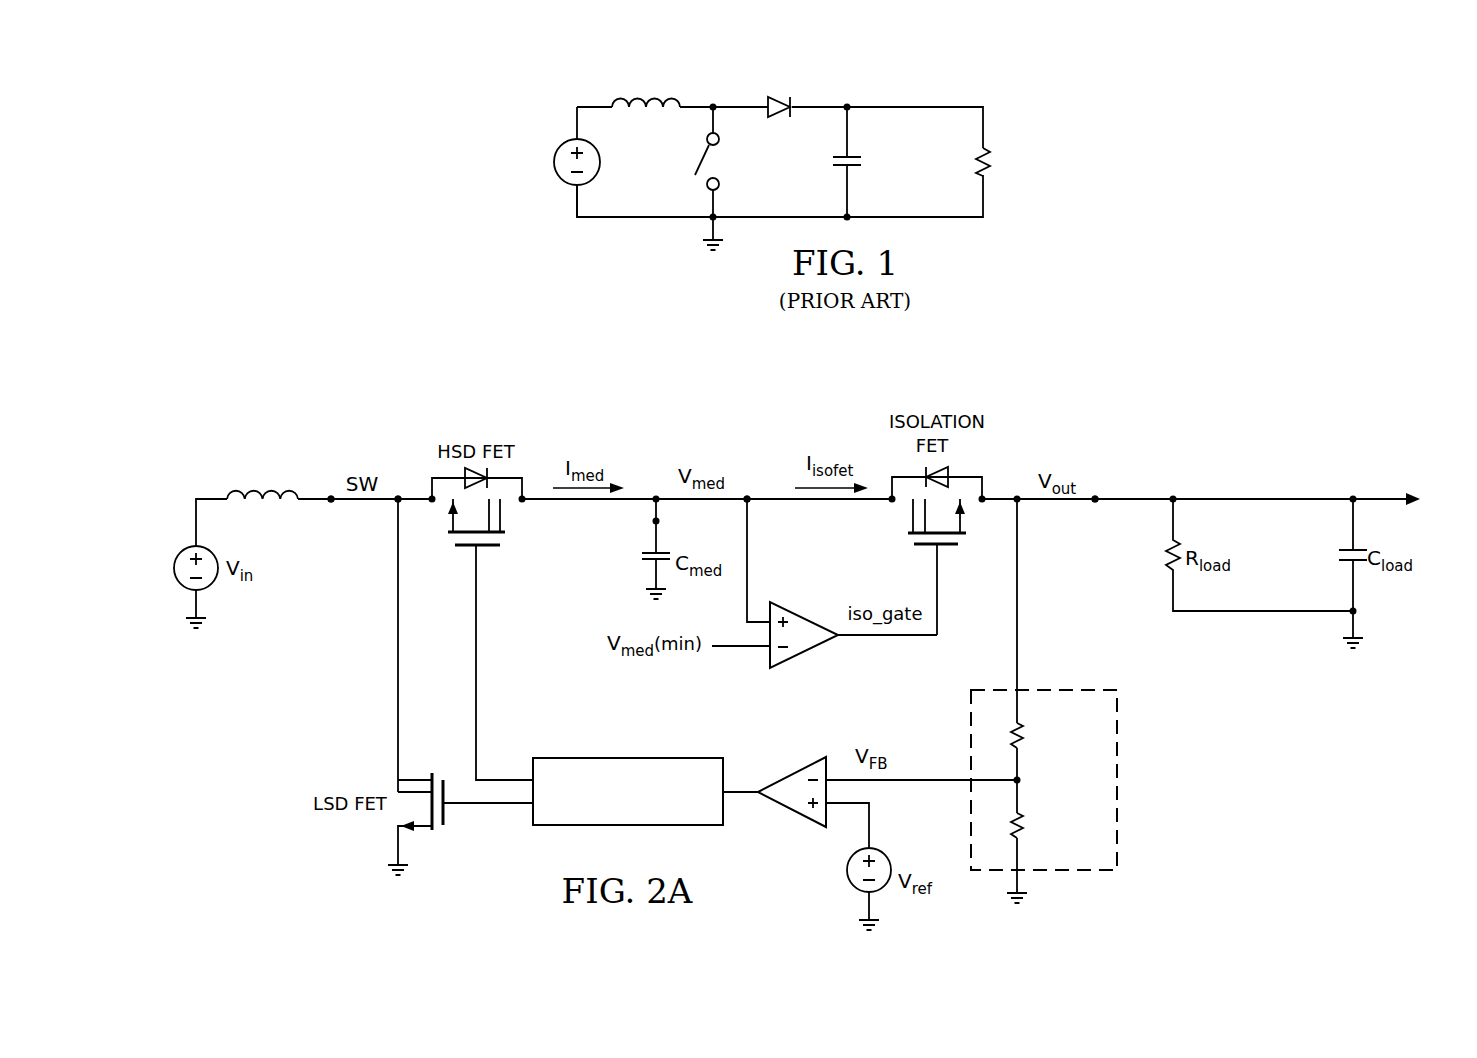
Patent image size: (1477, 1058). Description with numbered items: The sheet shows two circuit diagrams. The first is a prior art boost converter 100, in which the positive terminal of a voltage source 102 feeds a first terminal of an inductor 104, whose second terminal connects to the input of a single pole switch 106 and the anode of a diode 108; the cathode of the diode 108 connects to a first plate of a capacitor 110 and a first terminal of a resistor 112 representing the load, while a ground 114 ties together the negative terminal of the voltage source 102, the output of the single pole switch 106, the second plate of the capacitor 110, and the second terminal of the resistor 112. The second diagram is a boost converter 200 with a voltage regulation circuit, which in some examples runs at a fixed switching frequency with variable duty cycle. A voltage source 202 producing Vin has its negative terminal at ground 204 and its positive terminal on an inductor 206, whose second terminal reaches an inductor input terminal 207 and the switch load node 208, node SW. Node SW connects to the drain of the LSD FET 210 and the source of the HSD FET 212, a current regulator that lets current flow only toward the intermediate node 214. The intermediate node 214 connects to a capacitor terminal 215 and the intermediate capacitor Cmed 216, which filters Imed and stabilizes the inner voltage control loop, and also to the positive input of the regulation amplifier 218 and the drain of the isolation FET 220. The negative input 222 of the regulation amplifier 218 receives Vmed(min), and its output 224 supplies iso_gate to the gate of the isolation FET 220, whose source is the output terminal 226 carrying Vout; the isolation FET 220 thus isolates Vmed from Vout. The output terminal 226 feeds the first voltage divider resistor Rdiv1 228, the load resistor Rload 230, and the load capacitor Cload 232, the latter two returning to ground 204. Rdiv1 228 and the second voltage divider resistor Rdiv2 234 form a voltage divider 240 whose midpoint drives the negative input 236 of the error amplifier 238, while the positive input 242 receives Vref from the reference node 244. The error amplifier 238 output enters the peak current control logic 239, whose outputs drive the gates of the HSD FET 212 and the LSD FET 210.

In FIG. 1, the prior art boost converter 100 is at (902, 70).
In FIG. 1, the voltage source 102 is at (553, 162).
In FIG. 1, the inductor 104 is at (648, 92).
In FIG. 1, the single pole switch 106 is at (700, 165).
In FIG. 1, the diode 108 is at (789, 97).
In FIG. 1, the capacitor 110 is at (861, 161).
In FIG. 1, the resistor 112 is at (992, 162).
In FIG. 1, the ground 114 is at (703, 243).
In FIG. 2A, the boost converter 200 is at (1222, 412).
In FIG. 2A, the voltage source 202 is at (174, 567).
In FIG. 2A, the ground 204 is at (185, 620).
In FIG. 2A, the inductor 206 is at (263, 484).
In FIG. 2A, the inductor input terminal 207 is at (329, 507).
In FIG. 2A, the switch load node 208 is at (395, 505).
In FIG. 2A, the low side n-channel metal oxide semiconductor field effect transistor (LSD FET) 210 is at (448, 812).
In FIG. 2A, the high side n-channel MOSFET (HSD FET) 212 is at (469, 548).
In FIG. 2A, the intermediate node 214 is at (752, 505).
In FIG. 2A, the capacitor terminal 215 is at (651, 521).
In FIG. 2A, the intermediate capacitor Cmed 216 is at (643, 555).
In FIG. 2A, the regulation amplifier 218 is at (805, 655).
In FIG. 2A, the isolation FET 220 is at (945, 551).
In FIG. 2A, the second (negative) input 222 is at (731, 650).
In FIG. 2A, the output 224 is at (896, 639).
In FIG. 2A, the output terminal 226 is at (1098, 495).
In FIG. 2A, the first voltage divider resistor Rdiv1 228 is at (1026, 737).
In FIG. 2A, the load resistor Rload 230 is at (1168, 554).
In FIG. 2A, the load capacitor Cload 232 is at (1340, 556).
In FIG. 2A, the second voltage divider resistor Rdiv2 234 is at (1026, 827).
In FIG. 2A, the first (negative) input 236 is at (913, 779).
In FIG. 2A, the error amplifier 238 is at (789, 812).
In FIG. 2A, the peak current control logic 239 is at (629, 757).
In FIG. 2A, the voltage divider 240 is at (1131, 810).
In FIG. 2A, the second (positive) input 242 is at (872, 826).
In FIG. 2A, the reference node 244 is at (847, 868).